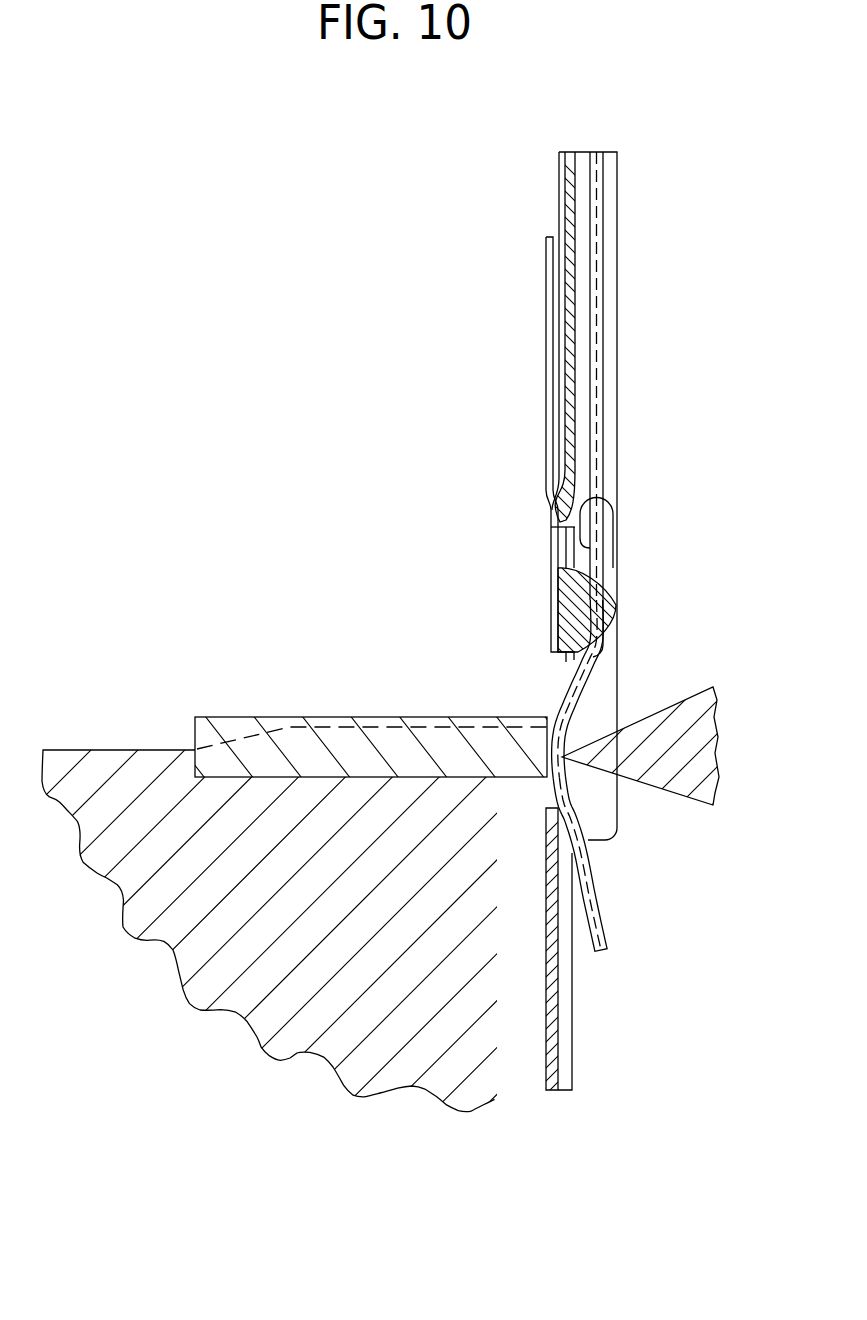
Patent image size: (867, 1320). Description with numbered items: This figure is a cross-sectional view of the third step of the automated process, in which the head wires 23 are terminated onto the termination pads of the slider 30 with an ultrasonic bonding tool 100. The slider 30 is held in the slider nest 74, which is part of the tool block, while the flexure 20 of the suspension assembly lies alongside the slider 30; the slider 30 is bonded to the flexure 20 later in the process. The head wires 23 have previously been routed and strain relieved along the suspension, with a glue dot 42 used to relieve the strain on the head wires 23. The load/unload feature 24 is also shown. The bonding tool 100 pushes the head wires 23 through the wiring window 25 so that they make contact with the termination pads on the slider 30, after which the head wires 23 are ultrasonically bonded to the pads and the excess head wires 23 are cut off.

The flexure 20 is at (547, 273).
The head wires 23 is at (610, 915).
The load/unload feature 24 is at (557, 1037).
The wiring window 25 is at (515, 678).
The slider 30 is at (288, 717).
The glue dot 42 is at (598, 597).
The slider nest 74 is at (357, 797).
The ultrasonic bonding tool 100 is at (693, 702).